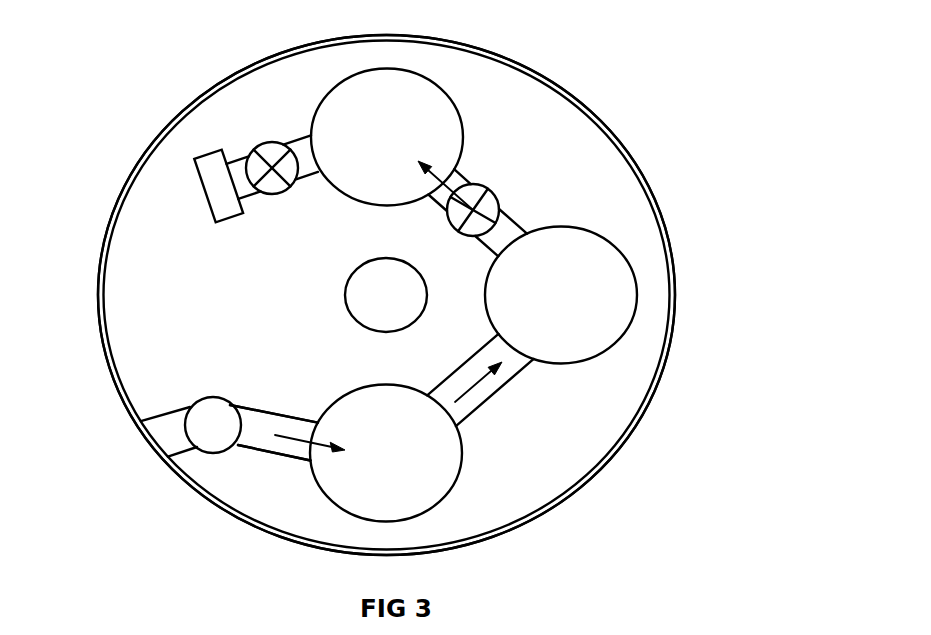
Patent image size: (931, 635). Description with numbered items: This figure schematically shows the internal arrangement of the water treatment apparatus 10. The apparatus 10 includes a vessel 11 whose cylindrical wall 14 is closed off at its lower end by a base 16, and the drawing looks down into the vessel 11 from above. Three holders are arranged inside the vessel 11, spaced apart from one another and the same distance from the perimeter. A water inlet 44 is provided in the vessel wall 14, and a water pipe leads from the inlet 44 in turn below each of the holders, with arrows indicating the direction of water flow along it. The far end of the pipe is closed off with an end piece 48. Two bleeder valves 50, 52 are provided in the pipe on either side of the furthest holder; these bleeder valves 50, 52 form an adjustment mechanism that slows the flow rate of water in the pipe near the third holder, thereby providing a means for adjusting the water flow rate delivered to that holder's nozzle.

The water treatment apparatus 10 is at (683, 57).
The vessel 11 is at (700, 201).
The cylindrical wall 14 is at (243, 518).
The base 16 is at (228, 317).
The water inlet 44 is at (139, 442).
The end piece 48 is at (217, 193).
The bleeder valve 50 is at (472, 192).
The bleeder valve 52 is at (272, 152).